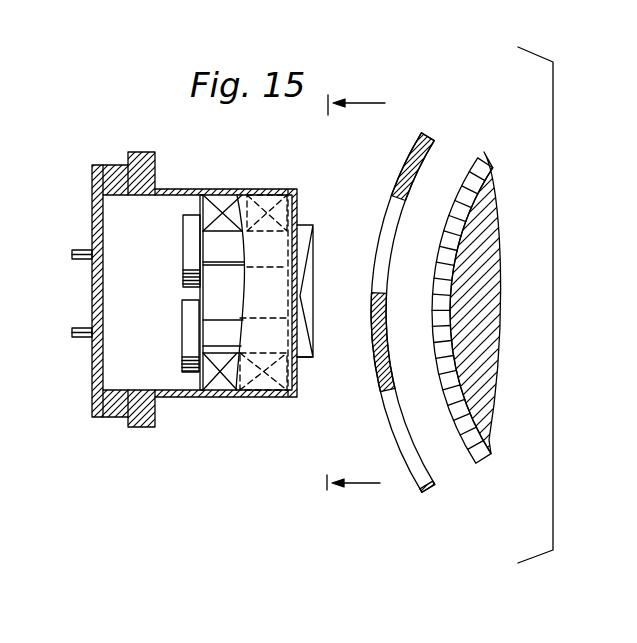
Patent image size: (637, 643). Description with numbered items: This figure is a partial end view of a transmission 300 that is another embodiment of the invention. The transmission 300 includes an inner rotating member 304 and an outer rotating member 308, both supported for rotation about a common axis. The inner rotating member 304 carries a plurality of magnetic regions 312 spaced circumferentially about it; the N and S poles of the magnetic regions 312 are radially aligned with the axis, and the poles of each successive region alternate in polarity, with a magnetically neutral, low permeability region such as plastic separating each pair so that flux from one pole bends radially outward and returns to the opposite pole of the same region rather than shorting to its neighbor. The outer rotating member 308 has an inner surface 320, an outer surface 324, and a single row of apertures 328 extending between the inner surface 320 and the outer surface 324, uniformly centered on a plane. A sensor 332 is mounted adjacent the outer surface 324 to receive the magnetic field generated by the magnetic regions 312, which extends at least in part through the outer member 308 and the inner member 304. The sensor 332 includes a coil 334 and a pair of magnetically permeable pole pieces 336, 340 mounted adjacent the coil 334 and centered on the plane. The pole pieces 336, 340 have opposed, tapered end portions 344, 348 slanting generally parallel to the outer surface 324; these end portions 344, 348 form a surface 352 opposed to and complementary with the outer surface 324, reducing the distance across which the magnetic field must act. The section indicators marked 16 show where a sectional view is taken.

The transmission 300 is at (450, 51).
The inner rotating member 304 is at (487, 429).
The outer rotating member 308 is at (425, 496).
The magnetic regions 312 is at (480, 162).
The inner surface 320 is at (401, 321).
The outer surface 324 is at (416, 145).
The apertures 328 is at (406, 201).
The sensor 332 is at (198, 401).
The coil 334 is at (217, 207).
The pole piece 336 is at (288, 260).
The pole piece 340 is at (282, 343).
The tapered end portion 344 is at (307, 217).
The tapered end portion 348 is at (302, 362).
The surface 352 is at (302, 290).
The section line 16 is at (356, 303).